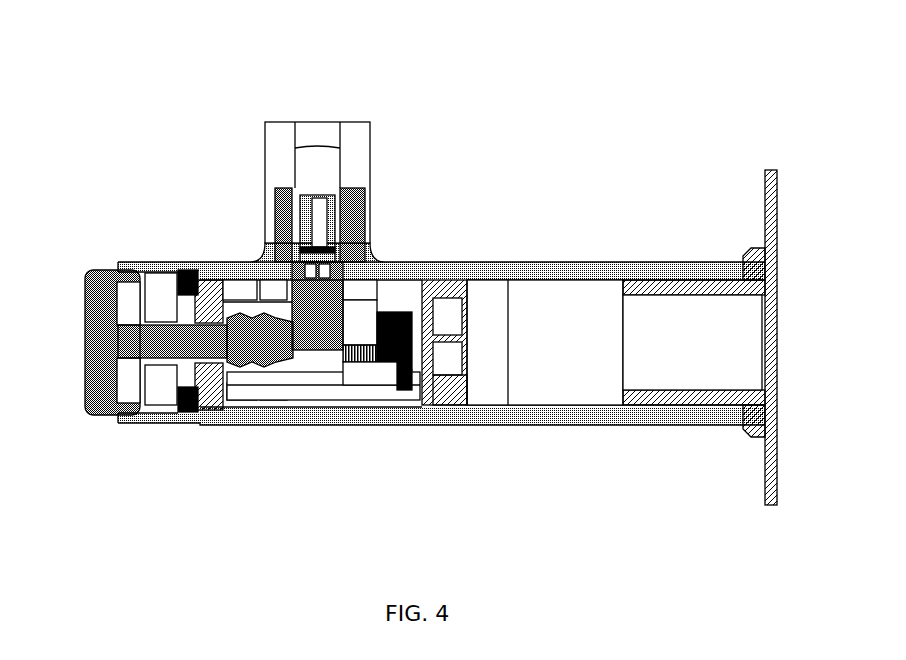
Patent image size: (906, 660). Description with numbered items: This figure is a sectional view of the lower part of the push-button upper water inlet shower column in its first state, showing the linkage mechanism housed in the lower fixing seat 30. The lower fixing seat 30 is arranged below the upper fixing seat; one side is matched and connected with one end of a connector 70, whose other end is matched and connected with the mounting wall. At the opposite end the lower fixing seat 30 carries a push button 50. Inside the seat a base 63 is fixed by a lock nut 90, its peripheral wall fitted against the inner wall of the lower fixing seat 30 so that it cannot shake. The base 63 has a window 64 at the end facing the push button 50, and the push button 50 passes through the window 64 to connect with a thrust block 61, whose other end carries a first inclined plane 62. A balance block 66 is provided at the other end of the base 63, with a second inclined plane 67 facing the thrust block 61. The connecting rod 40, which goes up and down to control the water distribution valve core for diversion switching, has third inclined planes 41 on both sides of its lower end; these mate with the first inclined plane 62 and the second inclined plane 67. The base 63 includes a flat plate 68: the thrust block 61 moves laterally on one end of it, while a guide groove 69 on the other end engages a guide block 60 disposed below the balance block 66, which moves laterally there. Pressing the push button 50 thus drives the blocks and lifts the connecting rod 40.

The lower fixing seat 30 is at (563, 270).
The connecting rod 40 is at (320, 160).
The third inclined planes 41 is at (343, 350).
The push button 50 is at (93, 270).
The guide block 60 is at (408, 385).
The thrust block 61 is at (186, 392).
The first inclined plane 62 is at (250, 262).
The base 63 is at (432, 285).
The window 64 is at (158, 318).
The balance block 66 is at (433, 395).
The second inclined plane 67 is at (352, 343).
The flat plate 68 is at (320, 372).
The guide groove 69 is at (386, 378).
The connector 70 is at (772, 175).
The lock nut 90 is at (183, 267).